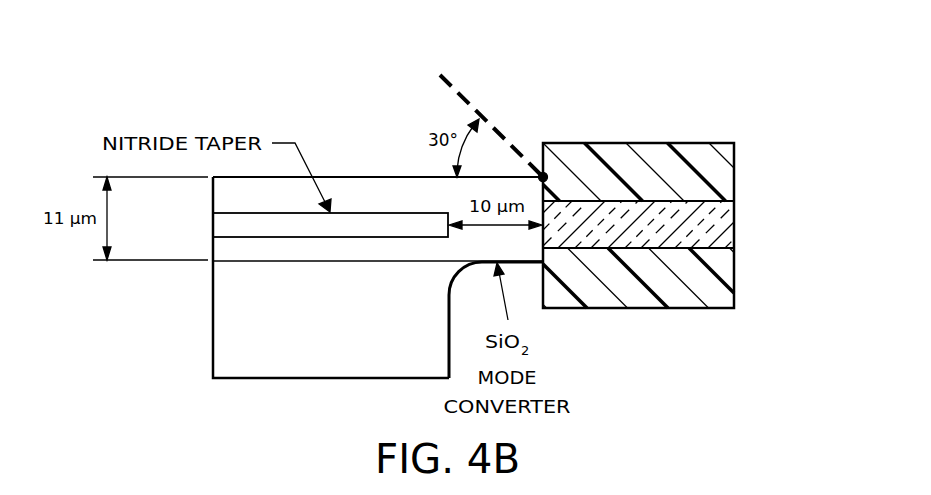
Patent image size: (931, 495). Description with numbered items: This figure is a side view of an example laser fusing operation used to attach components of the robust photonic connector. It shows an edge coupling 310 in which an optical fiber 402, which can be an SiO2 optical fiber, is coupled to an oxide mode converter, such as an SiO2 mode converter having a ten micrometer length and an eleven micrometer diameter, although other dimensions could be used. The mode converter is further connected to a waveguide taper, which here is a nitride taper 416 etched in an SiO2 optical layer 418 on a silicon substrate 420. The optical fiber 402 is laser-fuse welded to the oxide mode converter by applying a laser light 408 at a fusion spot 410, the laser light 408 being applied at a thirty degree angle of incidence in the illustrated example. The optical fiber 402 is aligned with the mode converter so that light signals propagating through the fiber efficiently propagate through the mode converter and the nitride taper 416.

The edge coupling 310 is at (286, 86).
The optical fiber 402 is at (645, 298).
The laser light 408 is at (503, 130).
The fusion spot 410 is at (547, 174).
The nitride taper 416 is at (222, 225).
The SiO2 optical layer 418 is at (222, 196).
The silicon substrate 420 is at (307, 352).